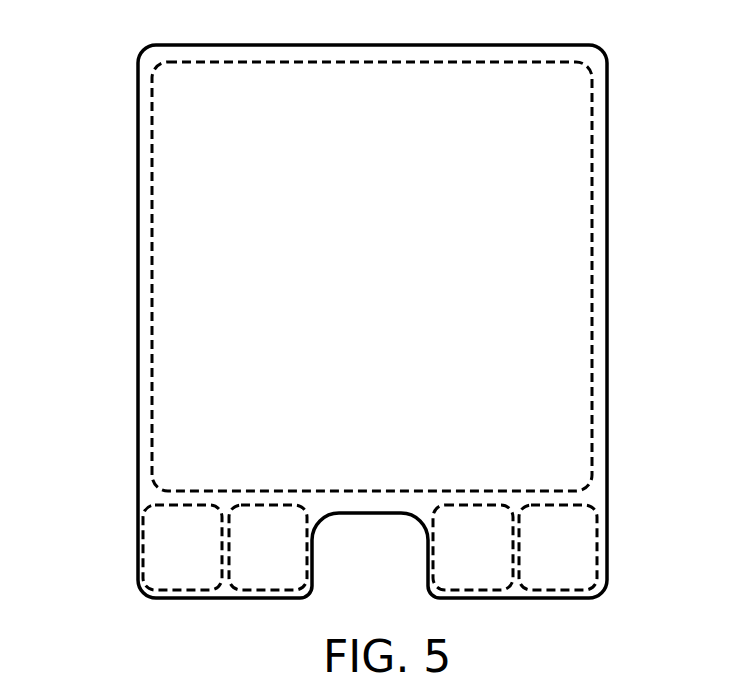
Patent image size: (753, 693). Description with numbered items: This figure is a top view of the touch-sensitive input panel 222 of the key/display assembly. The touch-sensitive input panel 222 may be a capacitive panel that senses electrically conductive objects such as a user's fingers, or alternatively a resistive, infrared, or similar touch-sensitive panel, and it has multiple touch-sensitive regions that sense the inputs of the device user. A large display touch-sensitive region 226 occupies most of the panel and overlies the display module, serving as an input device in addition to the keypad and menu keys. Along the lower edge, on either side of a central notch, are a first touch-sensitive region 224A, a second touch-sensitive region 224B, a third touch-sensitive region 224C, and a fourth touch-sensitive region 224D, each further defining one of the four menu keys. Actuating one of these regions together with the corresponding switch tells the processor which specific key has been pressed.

The touch-sensitive input panel 222 is at (83, 142).
The display touch-sensitive region 226 is at (593, 246).
The first touch-sensitive region 224A is at (188, 590).
The second touch-sensitive region 224B is at (270, 590).
The third touch-sensitive region 224C is at (470, 600).
The fourth touch-sensitive region 224D is at (553, 600).